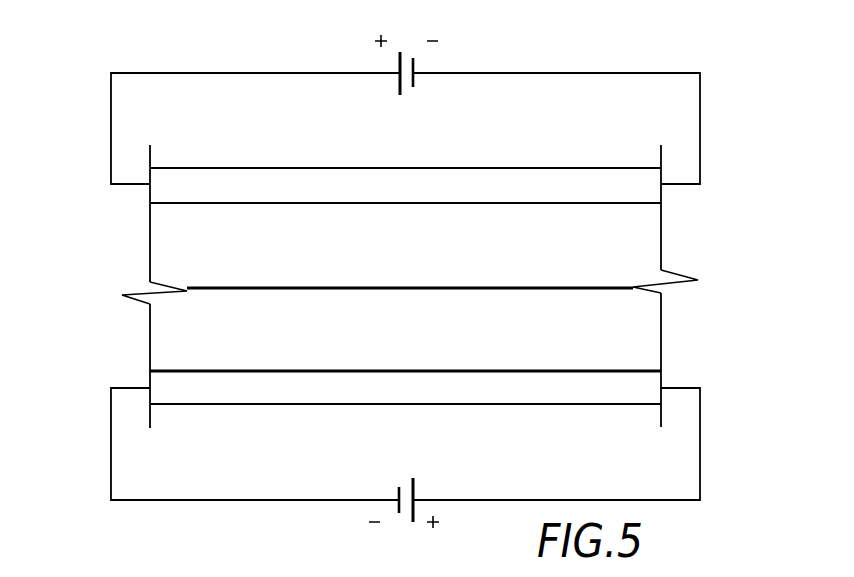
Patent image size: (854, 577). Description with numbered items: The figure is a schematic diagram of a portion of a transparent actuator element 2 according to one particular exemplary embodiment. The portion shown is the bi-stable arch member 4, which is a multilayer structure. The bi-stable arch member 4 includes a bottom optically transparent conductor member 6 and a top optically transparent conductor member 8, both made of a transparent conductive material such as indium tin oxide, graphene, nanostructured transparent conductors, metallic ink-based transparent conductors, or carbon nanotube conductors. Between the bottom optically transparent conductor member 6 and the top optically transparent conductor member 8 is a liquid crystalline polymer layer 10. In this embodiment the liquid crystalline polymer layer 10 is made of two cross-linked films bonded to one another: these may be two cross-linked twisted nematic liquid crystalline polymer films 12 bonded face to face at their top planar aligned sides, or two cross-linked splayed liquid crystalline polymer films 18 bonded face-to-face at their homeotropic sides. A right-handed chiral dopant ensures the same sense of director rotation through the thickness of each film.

The transparent actuator element 2 is at (622, 34).
The bi-stable arch member 4 is at (396, 271).
The bottom optically transparent conductor member 6 is at (249, 400).
The top optically transparent conductor member 8 is at (206, 180).
The liquid crystalline polymer layer 10 is at (396, 311).
The cross-linked twisted nematic liquid crystalline polymer film 12 is at (158, 234).
The cross-linked splayed liquid crystalline polymer film 18 is at (158, 337).